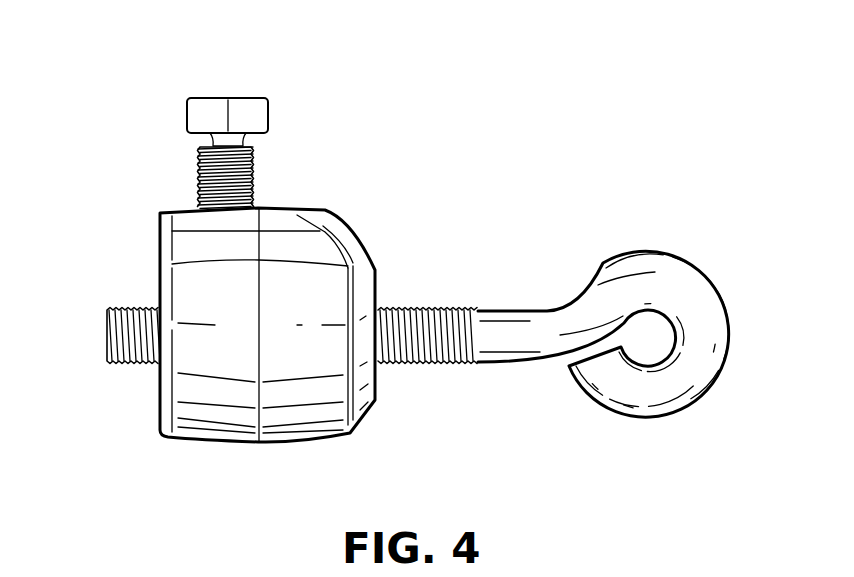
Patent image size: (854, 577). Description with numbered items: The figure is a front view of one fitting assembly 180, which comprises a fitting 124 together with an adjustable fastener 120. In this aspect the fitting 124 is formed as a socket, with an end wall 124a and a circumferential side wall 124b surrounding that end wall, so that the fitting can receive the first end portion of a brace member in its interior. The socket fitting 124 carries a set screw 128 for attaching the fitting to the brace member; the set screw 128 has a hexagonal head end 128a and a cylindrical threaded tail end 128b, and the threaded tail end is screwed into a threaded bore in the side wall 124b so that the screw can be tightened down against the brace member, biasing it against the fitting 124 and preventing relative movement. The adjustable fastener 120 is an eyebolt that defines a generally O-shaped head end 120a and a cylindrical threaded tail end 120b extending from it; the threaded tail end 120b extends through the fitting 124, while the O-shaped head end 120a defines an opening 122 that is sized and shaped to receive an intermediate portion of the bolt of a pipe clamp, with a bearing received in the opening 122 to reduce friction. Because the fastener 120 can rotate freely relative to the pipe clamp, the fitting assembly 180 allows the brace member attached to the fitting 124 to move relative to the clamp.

The fitting assembly 180 is at (523, 167).
The fitting 124 is at (141, 209).
The end wall 124a is at (380, 285).
The circumferential side wall 124b is at (212, 293).
The set screw 128 is at (280, 145).
The hexagonal head end 128a is at (247, 113).
The cylindrical threaded tail end 128b is at (246, 180).
The adjustable fastener 120 is at (530, 410).
The O-shaped head end 120a is at (690, 288).
The cylindrical threaded tail end 120b is at (430, 364).
The opening 122 is at (647, 342).